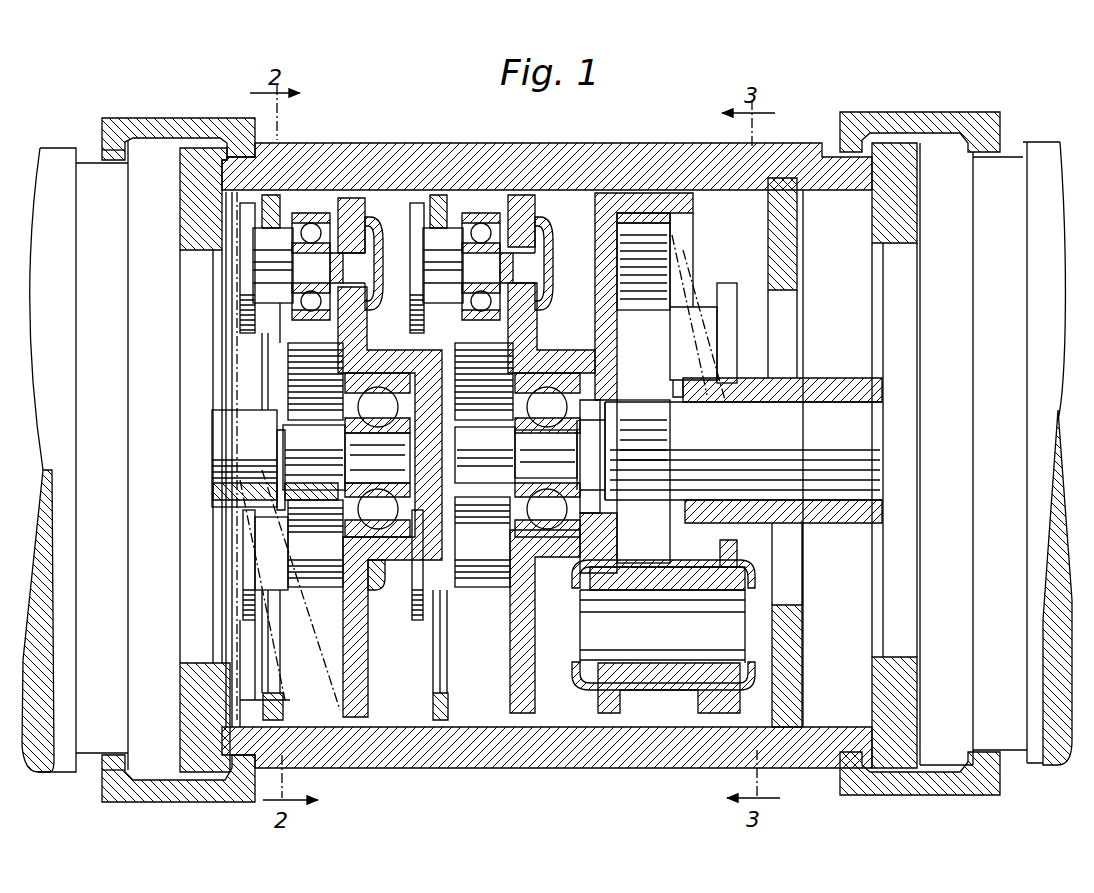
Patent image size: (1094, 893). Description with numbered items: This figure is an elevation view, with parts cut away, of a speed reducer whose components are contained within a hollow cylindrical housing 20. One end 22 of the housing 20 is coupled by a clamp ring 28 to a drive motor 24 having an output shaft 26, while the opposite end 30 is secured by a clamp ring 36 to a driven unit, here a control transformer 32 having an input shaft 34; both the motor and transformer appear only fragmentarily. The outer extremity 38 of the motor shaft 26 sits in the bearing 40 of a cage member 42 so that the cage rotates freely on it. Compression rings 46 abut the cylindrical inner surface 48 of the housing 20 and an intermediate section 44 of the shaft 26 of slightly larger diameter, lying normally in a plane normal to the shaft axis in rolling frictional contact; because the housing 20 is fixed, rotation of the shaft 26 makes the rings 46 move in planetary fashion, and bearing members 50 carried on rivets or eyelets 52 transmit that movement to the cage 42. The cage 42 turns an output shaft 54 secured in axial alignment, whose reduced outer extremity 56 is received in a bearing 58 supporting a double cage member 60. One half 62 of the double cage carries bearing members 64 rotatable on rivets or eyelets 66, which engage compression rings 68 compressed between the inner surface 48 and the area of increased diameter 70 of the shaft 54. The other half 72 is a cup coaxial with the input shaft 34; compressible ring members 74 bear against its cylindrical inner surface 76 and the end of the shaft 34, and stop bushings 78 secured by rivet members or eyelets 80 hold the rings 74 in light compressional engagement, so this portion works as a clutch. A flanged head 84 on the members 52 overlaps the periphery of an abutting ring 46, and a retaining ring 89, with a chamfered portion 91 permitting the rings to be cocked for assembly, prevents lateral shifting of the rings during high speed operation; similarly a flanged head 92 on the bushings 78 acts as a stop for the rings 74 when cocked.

The housing 20 is at (372, 165).
The one end of housing 22 is at (200, 752).
The drive motor 24 is at (63, 772).
The motor output shaft 26 is at (263, 512).
The clamp ring 28 is at (162, 118).
The opposite end of housing 30 is at (907, 748).
The control transformer 32 is at (1040, 762).
The input shaft 34 is at (783, 442).
The clamp ring 36 is at (907, 112).
The outer extremity of motor output shaft 38 is at (392, 460).
The bearing 40 is at (365, 377).
The cage member 42 is at (373, 197).
The intermediate section of output shaft 44 is at (328, 452).
The compression rings 46 is at (270, 483).
The cylindrical inner surface 48 is at (390, 730).
The bearing members 50 is at (315, 210).
The rivets or eyelets 52 is at (265, 243).
The output shaft 54 is at (403, 563).
The outer extremity of output shaft 56 is at (563, 450).
The bearing 58 is at (557, 377).
The double cage member 60 is at (537, 350).
The one half of cage member 62 is at (523, 713).
The bearing members 64 is at (478, 320).
The rivets or eyelets 66 is at (447, 220).
The compression rings 68 is at (505, 575).
The area of increased diameter 70 is at (496, 450).
The cup member 72 is at (637, 193).
The compressible ring members 74 is at (673, 248).
The cylindrical inner surface 76 is at (672, 213).
The stop bushings 78 is at (710, 690).
The rivet members or eyelets 80 is at (663, 636).
The flanged head 84 is at (247, 573).
The retaining ring 89 is at (260, 647).
The chamfered portion 91 is at (258, 705).
The flanged head 92 is at (733, 550).